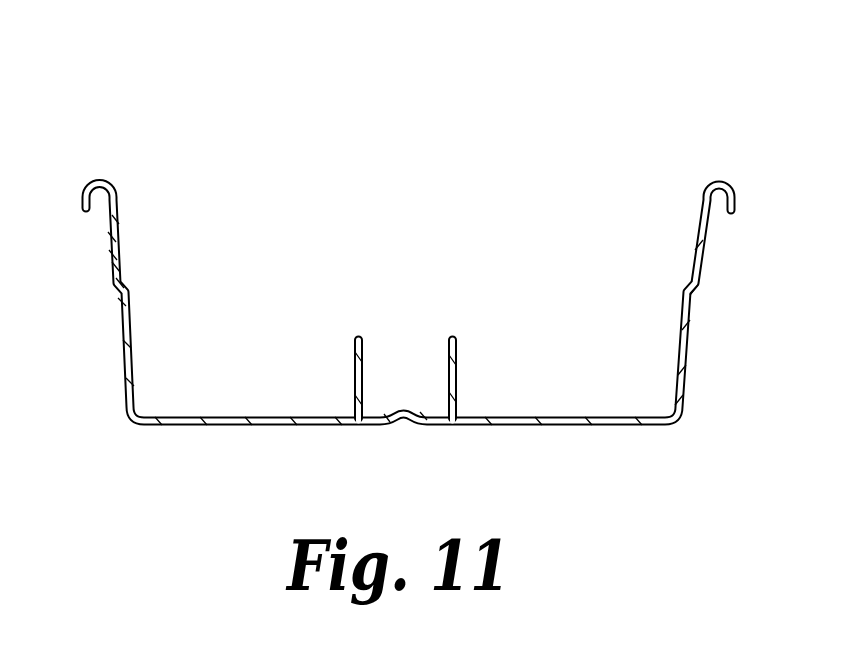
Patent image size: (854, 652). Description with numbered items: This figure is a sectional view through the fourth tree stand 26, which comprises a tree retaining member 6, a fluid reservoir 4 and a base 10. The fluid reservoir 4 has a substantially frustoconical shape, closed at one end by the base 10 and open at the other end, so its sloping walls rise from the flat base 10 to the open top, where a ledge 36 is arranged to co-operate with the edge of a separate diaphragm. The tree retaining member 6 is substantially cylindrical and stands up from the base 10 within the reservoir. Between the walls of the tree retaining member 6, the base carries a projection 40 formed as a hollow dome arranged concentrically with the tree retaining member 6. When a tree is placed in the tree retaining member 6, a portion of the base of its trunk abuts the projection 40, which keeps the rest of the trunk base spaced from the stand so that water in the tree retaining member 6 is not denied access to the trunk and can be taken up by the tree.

The fourth tree stand 26 is at (108, 143).
The fluid reservoir 4 is at (119, 220).
The ledge 36 is at (127, 285).
The tree retaining member 6 is at (462, 375).
The projection 40 is at (402, 410).
The base 10 is at (218, 425).